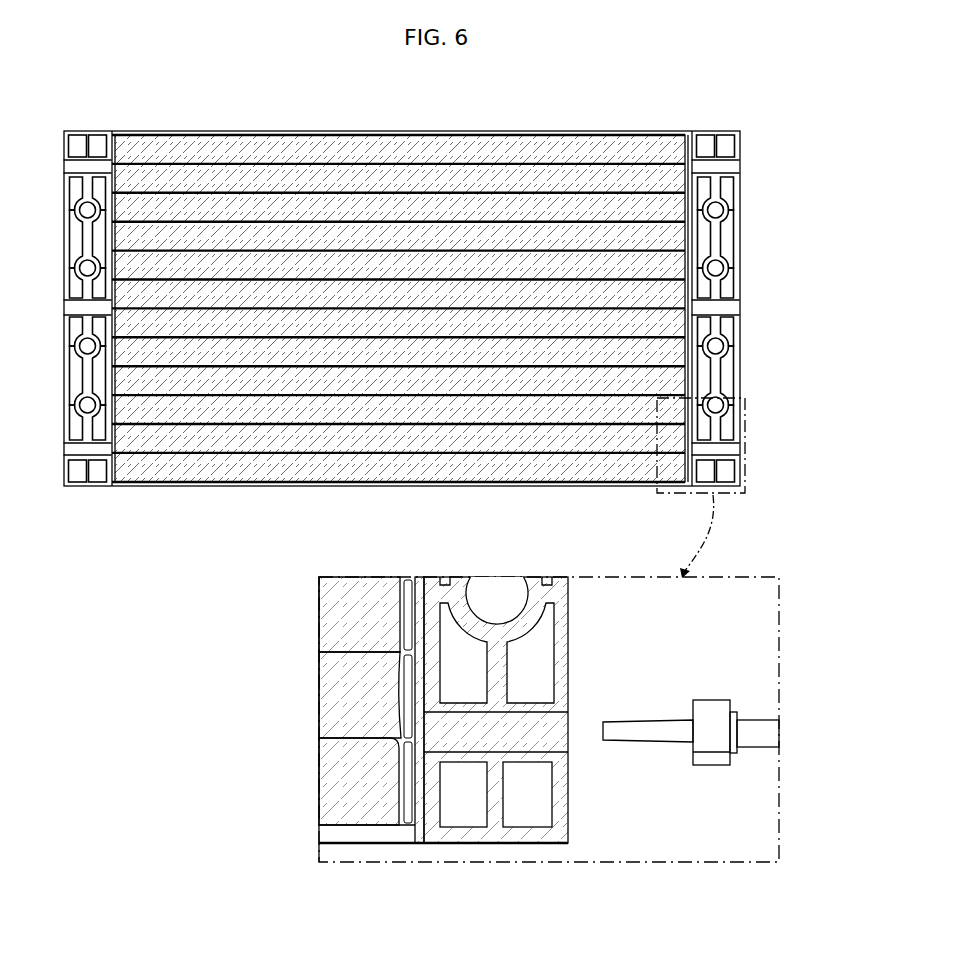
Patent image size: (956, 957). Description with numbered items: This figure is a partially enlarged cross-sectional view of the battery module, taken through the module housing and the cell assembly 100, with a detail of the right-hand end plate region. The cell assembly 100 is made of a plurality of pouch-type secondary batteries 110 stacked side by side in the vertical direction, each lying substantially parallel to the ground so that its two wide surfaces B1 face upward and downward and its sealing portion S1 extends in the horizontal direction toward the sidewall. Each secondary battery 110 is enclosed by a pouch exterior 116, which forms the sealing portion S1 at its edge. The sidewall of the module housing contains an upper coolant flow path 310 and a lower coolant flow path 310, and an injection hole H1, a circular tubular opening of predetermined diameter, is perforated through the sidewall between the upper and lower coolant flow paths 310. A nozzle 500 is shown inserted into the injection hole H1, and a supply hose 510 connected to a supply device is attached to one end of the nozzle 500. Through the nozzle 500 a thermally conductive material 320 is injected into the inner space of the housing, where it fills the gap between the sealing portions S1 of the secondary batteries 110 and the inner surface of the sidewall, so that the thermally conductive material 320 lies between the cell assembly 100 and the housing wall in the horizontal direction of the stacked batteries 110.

The cell assembly 100 is at (245, 470).
The secondary battery 110 is at (326, 615).
The pouch exterior 116 is at (408, 640).
The coolant flow path 310 is at (528, 656).
The thermally conductive material 320 is at (418, 622).
The nozzle 500 is at (703, 676).
The supply hose 510 is at (757, 719).
The wide surface B1 is at (370, 650).
The sealing portion S1 is at (414, 740).
The injection hole H1 is at (557, 723).